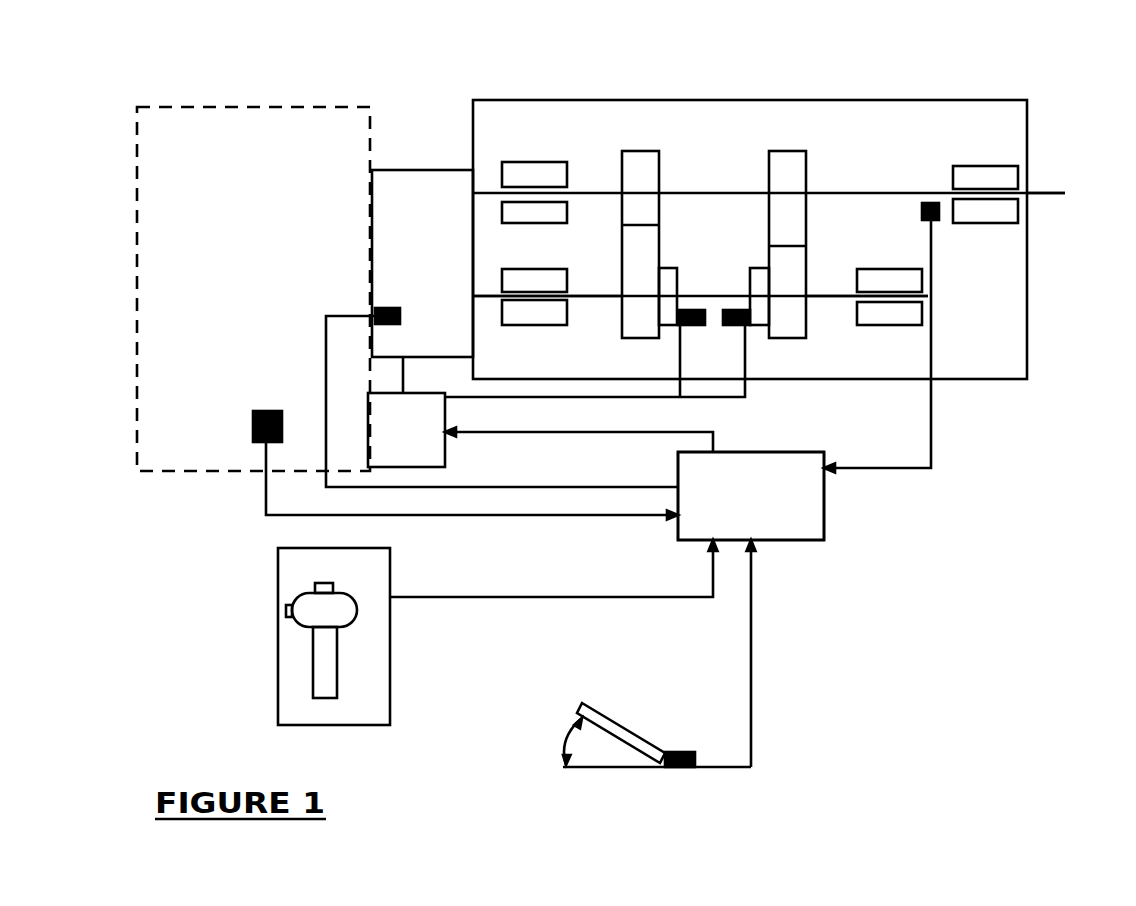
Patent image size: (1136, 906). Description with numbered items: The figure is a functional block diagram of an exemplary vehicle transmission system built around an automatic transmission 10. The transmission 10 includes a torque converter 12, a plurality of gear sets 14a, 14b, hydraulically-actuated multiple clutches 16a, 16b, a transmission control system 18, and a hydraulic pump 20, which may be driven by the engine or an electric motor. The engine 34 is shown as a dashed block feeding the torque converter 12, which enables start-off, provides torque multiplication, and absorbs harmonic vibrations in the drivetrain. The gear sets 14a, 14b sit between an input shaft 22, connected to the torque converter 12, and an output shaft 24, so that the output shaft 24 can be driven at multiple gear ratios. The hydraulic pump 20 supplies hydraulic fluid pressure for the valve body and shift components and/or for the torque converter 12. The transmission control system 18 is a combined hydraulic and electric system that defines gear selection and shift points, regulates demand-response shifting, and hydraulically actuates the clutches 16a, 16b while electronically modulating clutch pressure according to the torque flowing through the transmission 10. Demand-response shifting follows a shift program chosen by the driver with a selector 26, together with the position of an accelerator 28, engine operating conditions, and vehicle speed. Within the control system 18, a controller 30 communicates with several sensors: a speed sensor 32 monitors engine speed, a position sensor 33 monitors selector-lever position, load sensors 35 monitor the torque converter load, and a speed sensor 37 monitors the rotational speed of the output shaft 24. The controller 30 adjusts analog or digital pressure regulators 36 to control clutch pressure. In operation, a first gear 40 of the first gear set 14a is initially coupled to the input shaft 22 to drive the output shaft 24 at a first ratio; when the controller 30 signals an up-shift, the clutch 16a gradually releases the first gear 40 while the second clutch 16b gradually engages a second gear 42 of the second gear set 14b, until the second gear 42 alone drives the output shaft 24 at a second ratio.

The automatic transmission 10 is at (659, 94).
The torque converter 12 is at (393, 168).
The first gear set 14a is at (817, 240).
The second gear set 14b is at (667, 238).
The first clutch 16a is at (760, 282).
The second clutch 16b is at (663, 282).
The transmission control system 18 is at (862, 513).
The hydraulic pump 20 is at (445, 457).
The input shaft 22 is at (818, 298).
The output shaft 24 is at (1047, 193).
The selector 26 is at (273, 687).
The accelerator 28 is at (610, 757).
The controller 30 is at (785, 540).
The speed sensor 32 is at (252, 425).
The position sensor 33 is at (683, 767).
The engine 34 is at (255, 107).
The load sensors 35 is at (400, 322).
The pressure regulators 36 is at (740, 326).
The speed sensor 37 is at (937, 220).
The first gear 40 is at (789, 340).
The second gear 42 is at (617, 325).